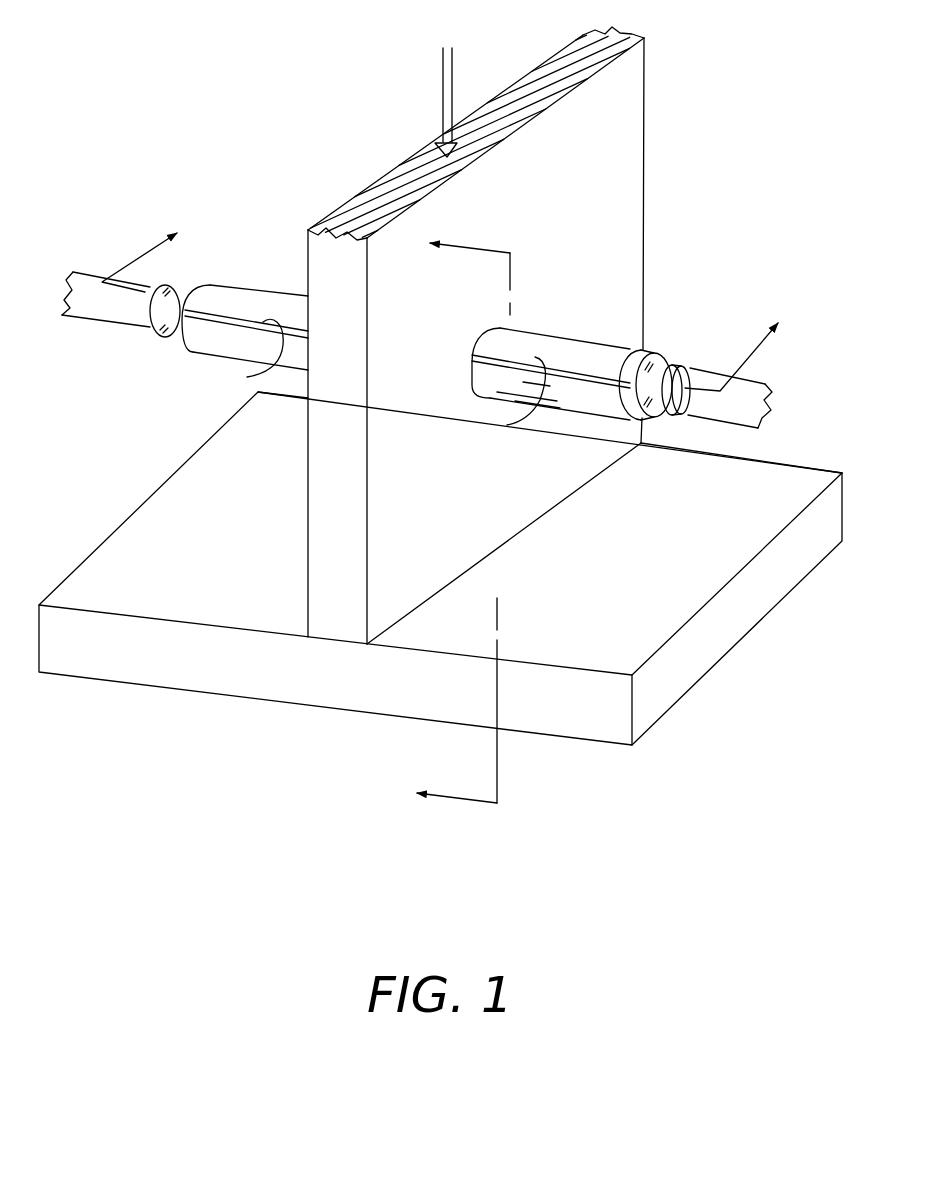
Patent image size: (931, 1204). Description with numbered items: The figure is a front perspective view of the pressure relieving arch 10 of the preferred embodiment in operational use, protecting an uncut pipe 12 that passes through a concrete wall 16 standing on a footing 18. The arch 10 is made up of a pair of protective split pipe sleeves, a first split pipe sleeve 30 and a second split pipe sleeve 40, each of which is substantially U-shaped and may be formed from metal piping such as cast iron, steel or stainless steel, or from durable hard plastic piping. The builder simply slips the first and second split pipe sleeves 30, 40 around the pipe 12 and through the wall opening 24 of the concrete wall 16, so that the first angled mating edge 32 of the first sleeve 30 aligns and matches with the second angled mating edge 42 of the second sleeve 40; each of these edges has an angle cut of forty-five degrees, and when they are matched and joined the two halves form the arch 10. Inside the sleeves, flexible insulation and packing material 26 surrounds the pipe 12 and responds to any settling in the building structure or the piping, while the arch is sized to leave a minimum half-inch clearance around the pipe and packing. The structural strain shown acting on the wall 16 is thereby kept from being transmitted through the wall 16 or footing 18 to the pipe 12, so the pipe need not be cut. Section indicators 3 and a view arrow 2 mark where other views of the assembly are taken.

The view direction arrow 2 is at (440, 302).
The section line 3 is at (448, 518).
The pressure relieving arch 10 is at (248, 250).
The uncut pipe 12 is at (83, 283).
The concrete wall 16 is at (447, 533).
The footing 18 is at (240, 668).
The wall opening 24 is at (483, 327).
The insulation/packing material 26 is at (167, 289).
The first split pipe sleeve 30 is at (247, 300).
The first angled mating edge 32 is at (216, 322).
The second split pipe sleeve 40 is at (222, 347).
The second angled mating edge 42 is at (382, 379).